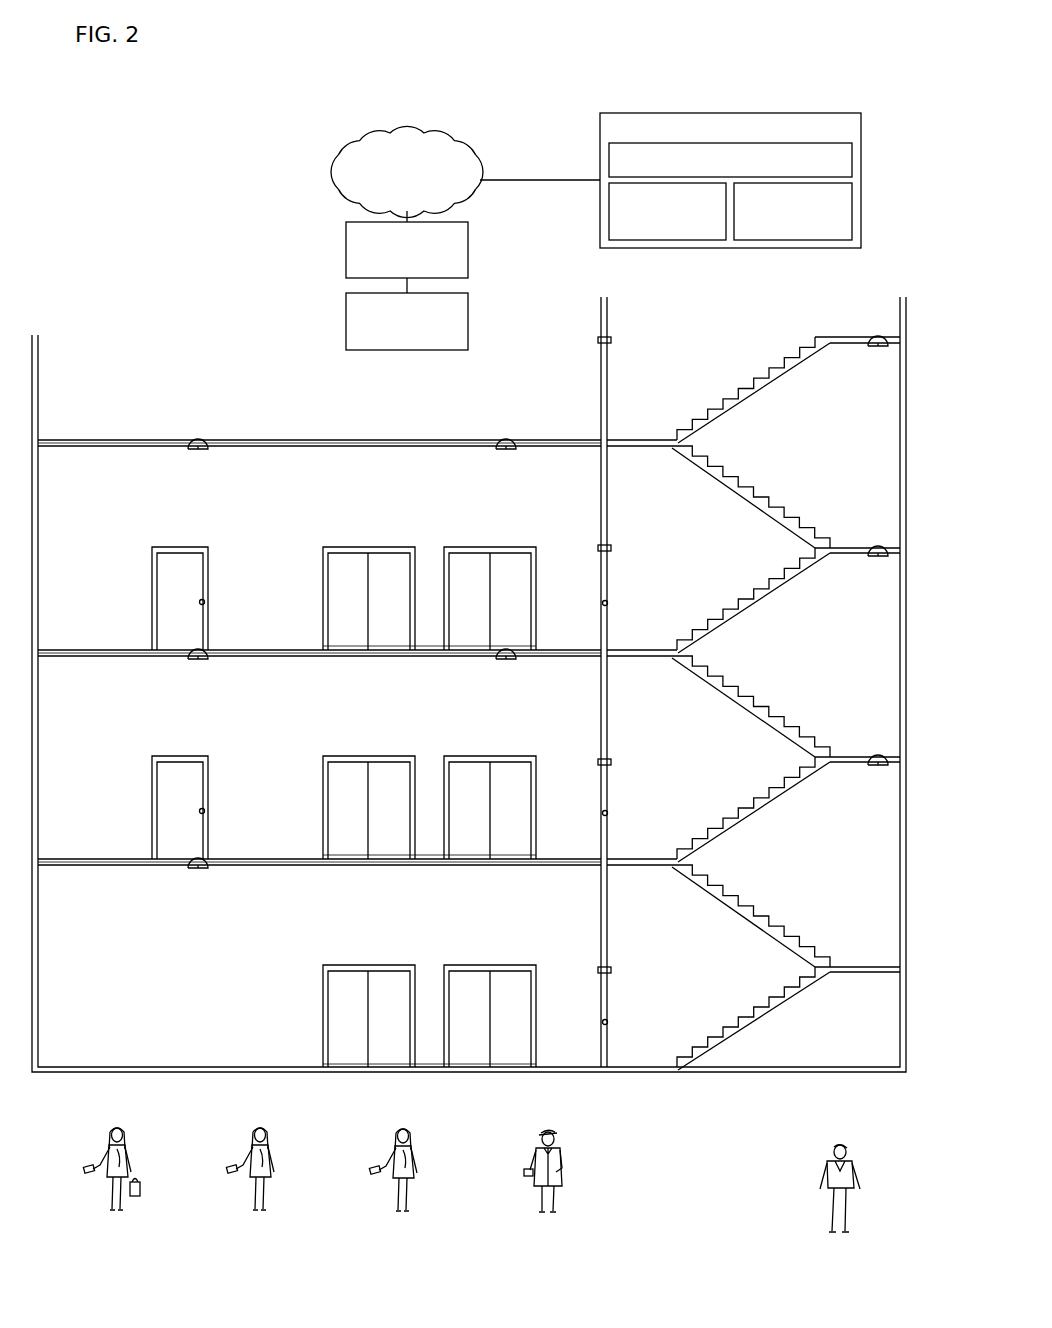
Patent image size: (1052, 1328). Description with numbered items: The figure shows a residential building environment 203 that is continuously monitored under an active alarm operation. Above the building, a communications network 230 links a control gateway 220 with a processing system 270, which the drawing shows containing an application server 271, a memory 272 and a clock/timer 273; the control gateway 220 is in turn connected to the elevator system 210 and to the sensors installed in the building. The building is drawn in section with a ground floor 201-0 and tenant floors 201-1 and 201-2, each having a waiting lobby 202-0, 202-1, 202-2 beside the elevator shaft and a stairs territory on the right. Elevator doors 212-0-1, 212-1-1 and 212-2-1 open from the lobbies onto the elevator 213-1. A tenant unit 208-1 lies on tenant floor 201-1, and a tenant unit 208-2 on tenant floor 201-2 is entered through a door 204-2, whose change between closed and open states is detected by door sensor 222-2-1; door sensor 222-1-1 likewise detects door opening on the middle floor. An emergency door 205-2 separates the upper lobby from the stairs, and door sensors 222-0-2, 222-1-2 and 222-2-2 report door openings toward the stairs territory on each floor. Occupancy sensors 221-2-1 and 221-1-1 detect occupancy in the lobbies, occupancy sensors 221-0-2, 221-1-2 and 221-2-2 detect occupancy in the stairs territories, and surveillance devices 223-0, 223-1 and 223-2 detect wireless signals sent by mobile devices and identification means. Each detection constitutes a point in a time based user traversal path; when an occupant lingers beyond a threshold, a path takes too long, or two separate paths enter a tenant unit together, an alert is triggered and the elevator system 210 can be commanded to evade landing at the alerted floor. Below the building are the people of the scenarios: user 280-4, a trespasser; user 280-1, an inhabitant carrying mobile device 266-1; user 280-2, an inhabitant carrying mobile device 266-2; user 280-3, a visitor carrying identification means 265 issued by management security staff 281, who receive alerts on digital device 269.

The building environment 203 is at (469, 565).
The communications network 230 is at (465, 174).
The control gateway 220 is at (407, 257).
The elevator system 210 is at (407, 321).
The processing system 270 is at (730, 180).
The application server 271 is at (730, 160).
The memory 272 is at (667, 211).
The clock / timer 273 is at (793, 211).
The emergency door 205-2 is at (629, 682).
The waiting lobby 202-2 is at (319, 470).
The waiting lobby 202-1 is at (319, 679).
The waiting lobby 202-0 is at (319, 889).
The tenant floor 201-2 is at (390, 585).
The tenant floor 201-1 is at (390, 795).
The ground floor 201-0 is at (390, 1004).
The door 204-2 is at (171, 560).
The tenant unit 208-2 is at (138, 598).
The tenant unit 208-1 is at (138, 807).
The door sensor 222-2-1 is at (235, 602).
The door sensor 222-1-1 is at (235, 811).
The door sensor 222-2-2 is at (636, 604).
The door sensor 222-1-2 is at (636, 813).
The door sensor 222-0-2 is at (636, 1022).
The elevator doors 212-2-1 is at (369, 598).
The elevator door floor 1 212-1-1 is at (369, 807).
The elevator doors 212-0-1 is at (369, 1016).
The elevator 213-1 is at (330, 1058).
The surveillance device 223-2 is at (198, 459).
The surveillance device 223-1 is at (198, 668).
The surveillance device 223-0 is at (198, 877).
The occupancy sensor 221-2-1 is at (513, 459).
The occupancy sensor 221-1-1 is at (513, 669).
The occupancy sensor 221-2-2 is at (867, 357).
The occupancy sensor 221-1-2 is at (867, 567).
The occupancy sensor 221-0-2 is at (868, 777).
The user 280-1 is at (88, 1159).
The user 280-2 is at (229, 1159).
The user 280-3 is at (382, 1159).
The user 280-4 is at (842, 1176).
The management security staff 281 is at (526, 1158).
The mobile device 266-1 is at (66, 1169).
The mobile device 266-2 is at (208, 1169).
The identification means 265 is at (360, 1169).
The digital device 269 is at (509, 1169).